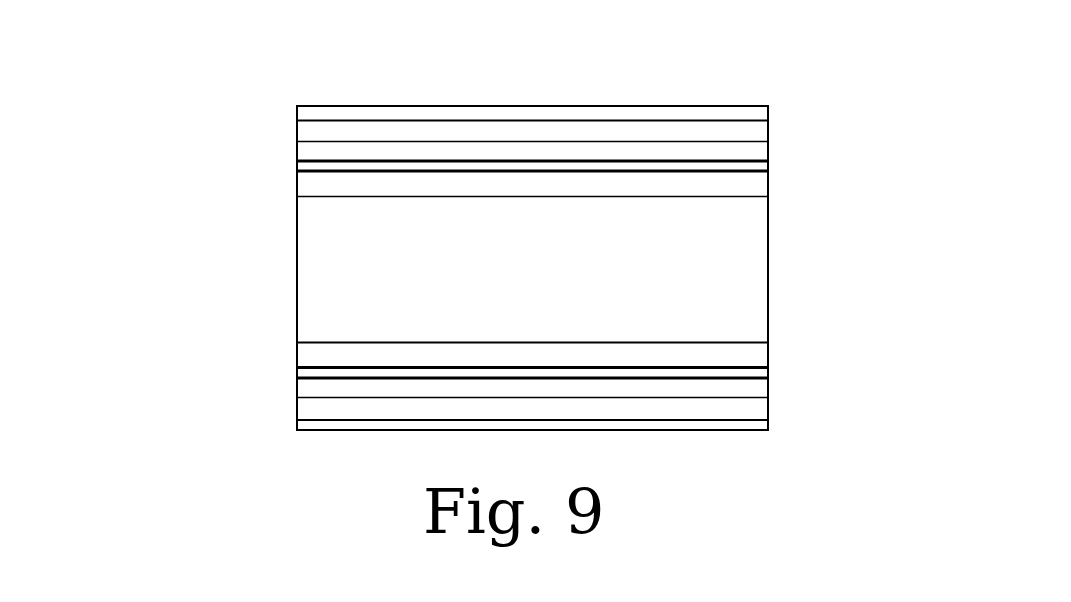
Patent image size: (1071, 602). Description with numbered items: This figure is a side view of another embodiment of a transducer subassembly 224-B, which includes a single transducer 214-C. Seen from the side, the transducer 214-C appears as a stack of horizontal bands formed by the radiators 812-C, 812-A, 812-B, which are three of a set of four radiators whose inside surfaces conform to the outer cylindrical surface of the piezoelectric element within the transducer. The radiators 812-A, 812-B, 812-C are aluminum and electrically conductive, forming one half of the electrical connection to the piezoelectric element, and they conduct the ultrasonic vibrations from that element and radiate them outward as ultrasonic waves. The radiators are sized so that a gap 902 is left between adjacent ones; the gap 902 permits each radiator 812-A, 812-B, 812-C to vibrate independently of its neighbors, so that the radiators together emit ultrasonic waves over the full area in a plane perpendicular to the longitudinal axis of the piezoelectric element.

The transducer subassembly 224-B is at (158, 73).
The transducer 214-C is at (820, 73).
The radiator 812-C is at (297, 132).
The radiator 812-A is at (297, 292).
The radiator 812-B is at (297, 406).
The gap 902 is at (768, 166).